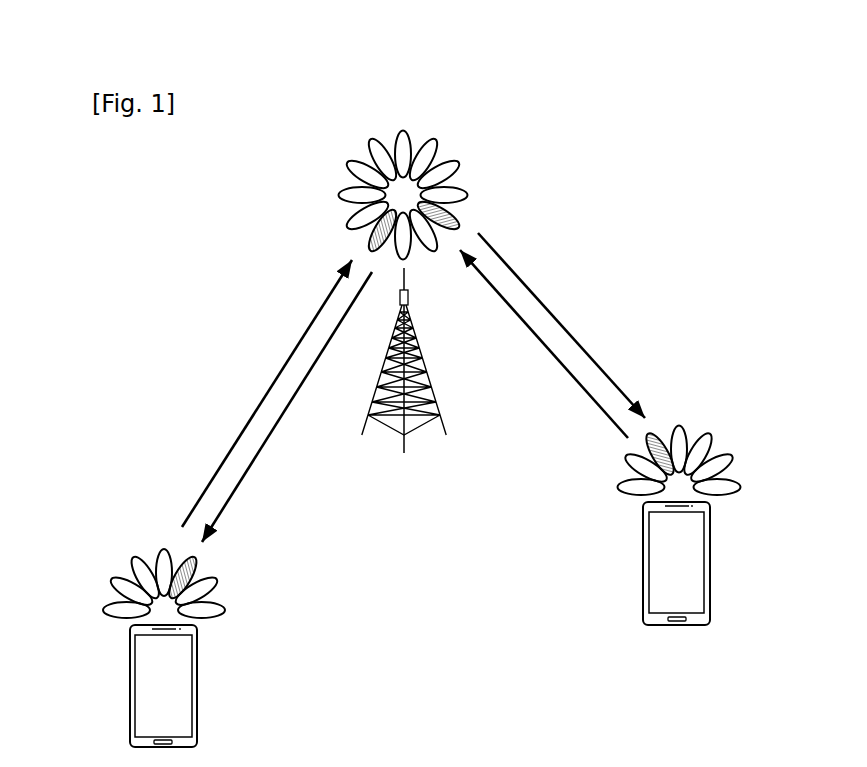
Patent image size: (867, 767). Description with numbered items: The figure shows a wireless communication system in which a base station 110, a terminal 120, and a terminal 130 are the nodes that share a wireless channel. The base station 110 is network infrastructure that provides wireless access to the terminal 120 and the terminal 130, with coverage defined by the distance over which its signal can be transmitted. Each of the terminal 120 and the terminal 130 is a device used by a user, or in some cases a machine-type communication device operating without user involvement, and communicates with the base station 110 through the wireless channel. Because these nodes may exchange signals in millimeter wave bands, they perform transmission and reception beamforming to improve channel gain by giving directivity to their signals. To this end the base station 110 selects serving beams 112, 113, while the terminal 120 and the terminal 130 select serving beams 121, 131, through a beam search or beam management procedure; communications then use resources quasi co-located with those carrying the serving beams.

The base station 110 is at (426, 348).
The serving beam 112 is at (366, 252).
The serving beam 113 is at (458, 222).
The terminal 120 is at (198, 655).
The serving beam 121 is at (199, 562).
The terminal 130 is at (711, 533).
The serving beam 131 is at (648, 454).